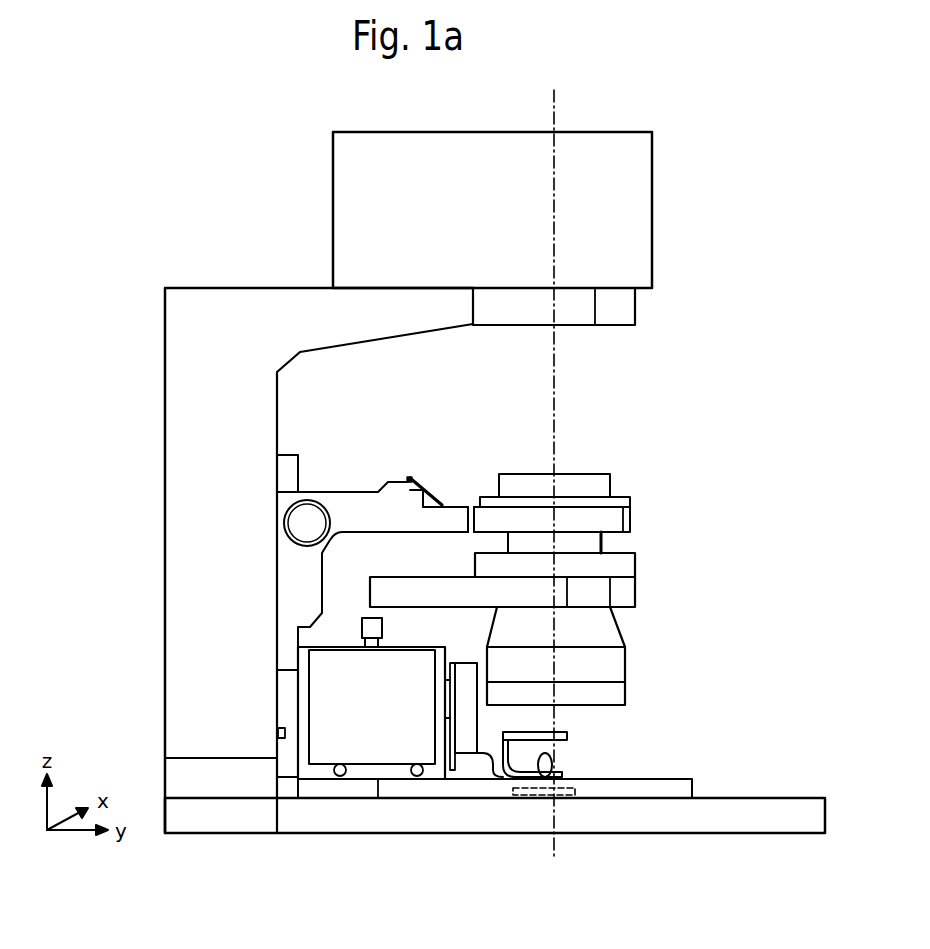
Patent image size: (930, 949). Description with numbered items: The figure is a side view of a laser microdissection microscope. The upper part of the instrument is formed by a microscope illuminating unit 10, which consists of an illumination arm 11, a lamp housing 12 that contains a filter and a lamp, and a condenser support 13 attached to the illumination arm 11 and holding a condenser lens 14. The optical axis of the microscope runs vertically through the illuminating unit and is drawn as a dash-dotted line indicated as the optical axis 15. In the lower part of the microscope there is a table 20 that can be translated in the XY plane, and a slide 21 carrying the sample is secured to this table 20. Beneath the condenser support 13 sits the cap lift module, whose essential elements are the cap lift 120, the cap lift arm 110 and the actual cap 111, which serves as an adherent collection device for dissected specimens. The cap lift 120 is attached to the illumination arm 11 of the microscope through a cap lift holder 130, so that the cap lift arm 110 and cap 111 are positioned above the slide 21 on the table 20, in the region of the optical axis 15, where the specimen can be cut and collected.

The microscope illuminating unit 10 is at (158, 327).
The illumination arm 11 is at (233, 420).
The lamp housing 12 is at (377, 194).
The condenser support 13 is at (398, 502).
The condenser lens 14 is at (588, 565).
The optical axis 15 is at (555, 402).
The table 20 is at (675, 815).
The slide 21 is at (540, 793).
The cap lift arm 110 is at (467, 687).
The cap 111 is at (547, 763).
The cap lift 120 is at (350, 695).
The cap lift holder 130 is at (287, 748).